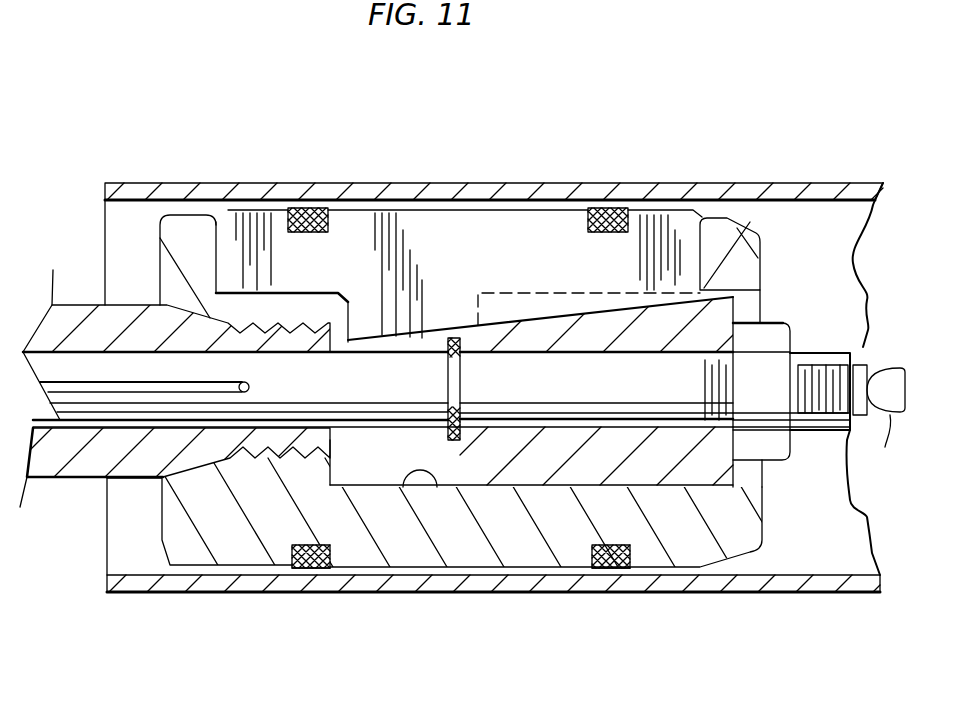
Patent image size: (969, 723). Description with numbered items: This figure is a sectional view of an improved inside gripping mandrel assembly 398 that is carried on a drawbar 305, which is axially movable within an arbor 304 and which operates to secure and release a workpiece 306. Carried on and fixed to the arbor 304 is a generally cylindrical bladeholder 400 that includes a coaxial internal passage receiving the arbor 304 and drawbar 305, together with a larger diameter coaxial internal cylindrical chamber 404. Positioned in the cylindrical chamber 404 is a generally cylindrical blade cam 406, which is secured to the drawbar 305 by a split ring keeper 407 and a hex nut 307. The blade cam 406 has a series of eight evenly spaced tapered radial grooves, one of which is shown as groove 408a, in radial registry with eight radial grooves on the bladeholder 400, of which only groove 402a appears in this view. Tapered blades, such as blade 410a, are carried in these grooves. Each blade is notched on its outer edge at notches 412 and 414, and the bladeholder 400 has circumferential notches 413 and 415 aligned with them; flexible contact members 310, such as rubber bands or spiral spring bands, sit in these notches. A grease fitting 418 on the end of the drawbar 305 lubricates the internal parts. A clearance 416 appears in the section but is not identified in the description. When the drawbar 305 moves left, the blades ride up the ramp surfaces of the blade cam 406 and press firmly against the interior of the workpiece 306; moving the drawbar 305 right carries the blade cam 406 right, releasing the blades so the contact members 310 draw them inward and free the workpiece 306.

The arbor 304 is at (80, 460).
The drawbar 305 is at (436, 391).
The workpiece 306 is at (852, 182).
The hex nut 307 is at (785, 462).
The flexible contact members 310 is at (327, 570).
The mandrel assembly 398 is at (388, 210).
The bladeholder 400 is at (208, 548).
The radial groove 402a is at (217, 257).
The cylindrical chamber 404 is at (433, 487).
The blade cam 406 is at (718, 470).
The split ring keeper 407 is at (455, 443).
The tapered radial groove 408a is at (505, 322).
The tapered blade 410a is at (512, 263).
The notch 412 is at (303, 230).
The circumferential notch 413 is at (300, 570).
The notch 414 is at (610, 233).
The circumferential notch 415 is at (608, 570).
The gap 416 is at (374, 454).
The grease fitting 418 is at (890, 415).